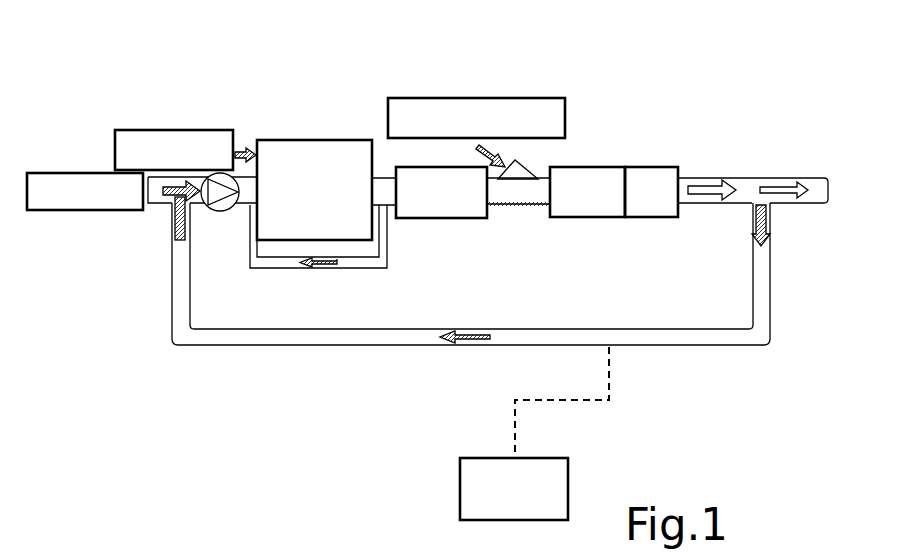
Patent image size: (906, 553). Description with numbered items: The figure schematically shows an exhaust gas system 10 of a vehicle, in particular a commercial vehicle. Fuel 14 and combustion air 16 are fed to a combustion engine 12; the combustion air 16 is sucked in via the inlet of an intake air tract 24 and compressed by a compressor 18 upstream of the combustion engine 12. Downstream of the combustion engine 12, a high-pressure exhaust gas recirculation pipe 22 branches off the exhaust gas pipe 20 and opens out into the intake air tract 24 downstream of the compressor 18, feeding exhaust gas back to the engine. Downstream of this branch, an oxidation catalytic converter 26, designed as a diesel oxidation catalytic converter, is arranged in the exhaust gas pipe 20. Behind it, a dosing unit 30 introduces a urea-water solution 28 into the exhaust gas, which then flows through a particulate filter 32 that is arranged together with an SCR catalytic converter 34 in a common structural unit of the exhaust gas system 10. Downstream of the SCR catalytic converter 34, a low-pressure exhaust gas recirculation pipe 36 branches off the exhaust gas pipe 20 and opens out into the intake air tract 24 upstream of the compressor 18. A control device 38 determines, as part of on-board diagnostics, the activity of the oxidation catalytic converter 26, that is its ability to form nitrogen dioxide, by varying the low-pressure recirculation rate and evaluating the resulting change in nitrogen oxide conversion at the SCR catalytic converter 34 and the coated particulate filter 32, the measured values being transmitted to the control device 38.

The exhaust gas system 10 is at (340, 96).
The combustion engine 12 is at (322, 155).
The fuel 14 is at (178, 142).
The combustion air 16 is at (85, 183).
The compressor 18 is at (228, 211).
The exhaust gas pipe 20 is at (520, 200).
The high-pressure exhaust gas recirculation pipe 22 is at (258, 270).
The intake air tract 24 is at (162, 203).
The oxidation catalytic converter 26 is at (443, 208).
The urea-water solution 28 is at (445, 107).
The dosing unit 30 is at (492, 144).
The particulate filter 32 is at (597, 210).
The SCR catalytic converter 34 is at (655, 178).
The low-pressure exhaust gas recirculation pipe 36 is at (663, 335).
The control device 38 is at (465, 492).